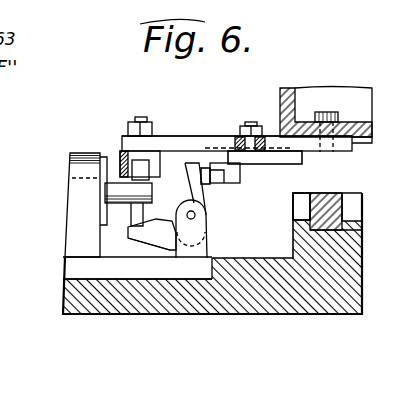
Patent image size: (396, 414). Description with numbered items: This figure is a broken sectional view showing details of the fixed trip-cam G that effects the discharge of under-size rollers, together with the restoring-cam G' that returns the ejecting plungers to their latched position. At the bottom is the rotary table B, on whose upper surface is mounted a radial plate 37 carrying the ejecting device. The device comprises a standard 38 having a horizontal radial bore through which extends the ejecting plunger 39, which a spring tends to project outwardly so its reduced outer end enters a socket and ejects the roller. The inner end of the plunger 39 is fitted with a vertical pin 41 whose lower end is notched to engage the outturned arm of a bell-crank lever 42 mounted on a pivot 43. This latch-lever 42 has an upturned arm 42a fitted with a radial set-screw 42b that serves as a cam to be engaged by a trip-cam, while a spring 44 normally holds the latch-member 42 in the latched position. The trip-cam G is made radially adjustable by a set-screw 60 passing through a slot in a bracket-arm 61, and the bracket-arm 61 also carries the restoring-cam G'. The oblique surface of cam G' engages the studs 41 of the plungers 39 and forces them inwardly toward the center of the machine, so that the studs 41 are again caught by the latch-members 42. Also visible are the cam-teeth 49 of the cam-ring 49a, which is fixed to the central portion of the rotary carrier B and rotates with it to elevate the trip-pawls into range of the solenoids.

The rotary table B is at (223, 297).
The radial plate 37 is at (64, 265).
The standard 38 is at (70, 178).
The ejecting plunger 39 is at (118, 186).
The vertical pin 41 is at (137, 165).
The bell-crank lever 42 is at (163, 230).
The upturned arm 42a is at (190, 163).
The radial set-screw 42b is at (207, 170).
The pivot 43 is at (206, 216).
The spring 44 is at (168, 242).
The cam-teeth 49 is at (300, 207).
The toothed cam-ring 49a is at (332, 197).
The set-screw 60 is at (243, 136).
The bracket-arm 61 is at (163, 136).
The trip-cam G is at (256, 173).
The restoring-cam G' is at (106, 141).